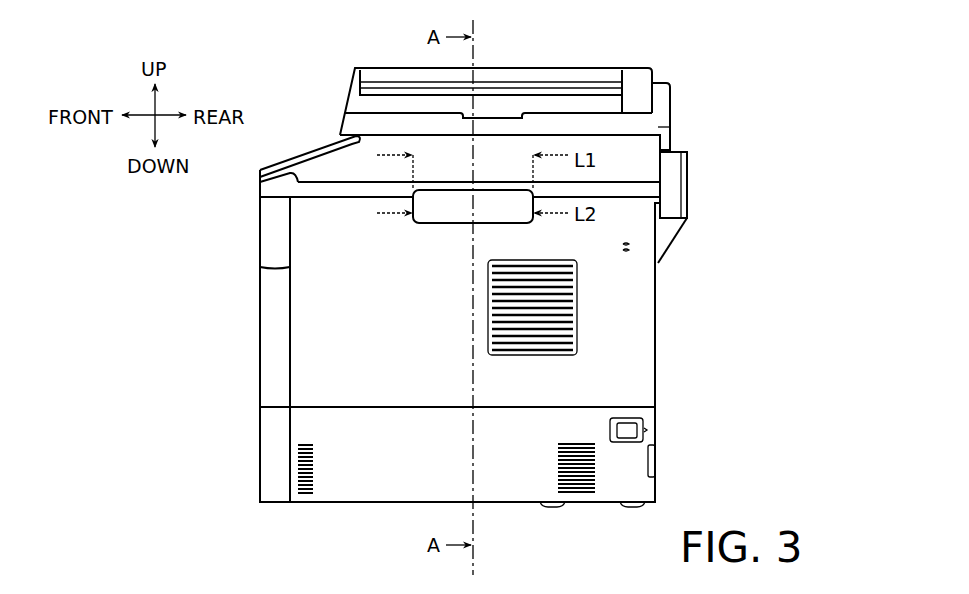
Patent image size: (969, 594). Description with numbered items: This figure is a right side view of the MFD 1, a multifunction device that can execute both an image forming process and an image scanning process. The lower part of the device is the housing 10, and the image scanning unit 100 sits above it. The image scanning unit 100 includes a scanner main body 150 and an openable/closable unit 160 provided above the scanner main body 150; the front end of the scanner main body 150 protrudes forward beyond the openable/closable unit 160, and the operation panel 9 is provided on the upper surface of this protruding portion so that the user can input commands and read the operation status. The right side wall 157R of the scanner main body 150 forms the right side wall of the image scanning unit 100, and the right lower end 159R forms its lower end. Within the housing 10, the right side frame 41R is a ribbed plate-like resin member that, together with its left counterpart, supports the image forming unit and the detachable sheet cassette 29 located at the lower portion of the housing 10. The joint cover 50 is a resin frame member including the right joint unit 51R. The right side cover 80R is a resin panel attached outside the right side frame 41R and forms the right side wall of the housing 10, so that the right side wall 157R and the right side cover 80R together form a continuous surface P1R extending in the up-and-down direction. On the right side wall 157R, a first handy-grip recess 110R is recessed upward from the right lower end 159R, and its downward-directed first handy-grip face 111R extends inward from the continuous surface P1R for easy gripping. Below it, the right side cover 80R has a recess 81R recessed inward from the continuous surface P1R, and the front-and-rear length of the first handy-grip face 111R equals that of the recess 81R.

The MFD 1 is at (807, 61).
The operation panel 9 is at (292, 157).
The housing 10 is at (664, 376).
The sheet cassette 29 is at (257, 456).
The side frame 41R is at (275, 323).
The joint cover 50 is at (257, 222).
The joint unit 51R is at (275, 240).
The right side cover 80R is at (640, 307).
The recess 81R is at (453, 197).
The image scanning unit 100 is at (597, 67).
The first handy-grip recess 110R is at (437, 203).
The first handy-grip face 111R is at (410, 210).
The scanner main body 150 is at (665, 167).
The right side wall 157R is at (620, 162).
The right lower end 159R is at (623, 200).
The openable/closable unit 160 is at (663, 104).
The continuous surface P1R is at (385, 313).